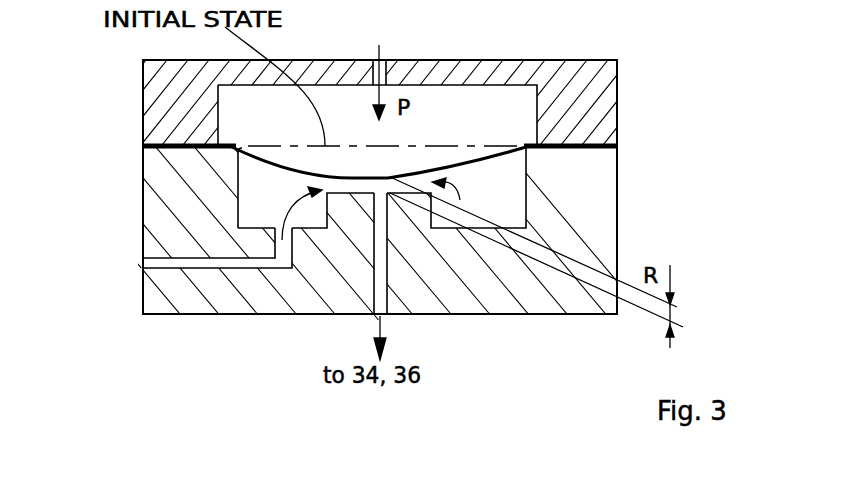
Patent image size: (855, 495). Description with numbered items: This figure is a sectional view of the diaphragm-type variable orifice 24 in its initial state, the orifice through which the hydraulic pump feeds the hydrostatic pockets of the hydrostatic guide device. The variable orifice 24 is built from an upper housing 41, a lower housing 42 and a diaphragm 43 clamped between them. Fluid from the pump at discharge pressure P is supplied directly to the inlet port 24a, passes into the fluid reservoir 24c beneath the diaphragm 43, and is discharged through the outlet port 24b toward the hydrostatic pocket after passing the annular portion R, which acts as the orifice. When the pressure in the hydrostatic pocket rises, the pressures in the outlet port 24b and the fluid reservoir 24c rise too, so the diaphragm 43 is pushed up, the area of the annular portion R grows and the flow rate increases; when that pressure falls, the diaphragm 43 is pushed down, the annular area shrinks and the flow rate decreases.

The variable orifice 24 is at (625, 48).
The inlet port 24a is at (143, 264).
The outlet port 24b is at (385, 317).
The fluid reservoir 24c is at (255, 183).
The upper housing 41 is at (617, 75).
The lower housing 42 is at (617, 176).
The diaphragm 43 is at (472, 155).